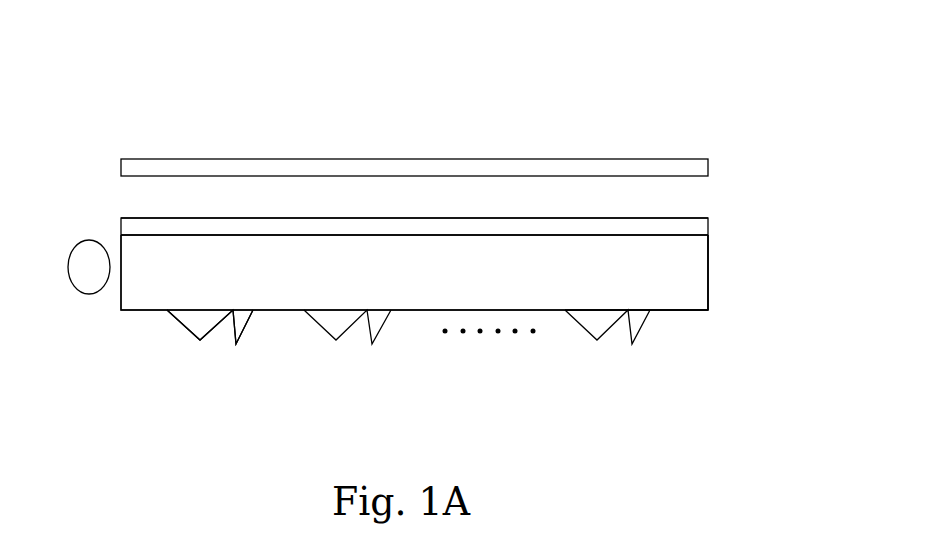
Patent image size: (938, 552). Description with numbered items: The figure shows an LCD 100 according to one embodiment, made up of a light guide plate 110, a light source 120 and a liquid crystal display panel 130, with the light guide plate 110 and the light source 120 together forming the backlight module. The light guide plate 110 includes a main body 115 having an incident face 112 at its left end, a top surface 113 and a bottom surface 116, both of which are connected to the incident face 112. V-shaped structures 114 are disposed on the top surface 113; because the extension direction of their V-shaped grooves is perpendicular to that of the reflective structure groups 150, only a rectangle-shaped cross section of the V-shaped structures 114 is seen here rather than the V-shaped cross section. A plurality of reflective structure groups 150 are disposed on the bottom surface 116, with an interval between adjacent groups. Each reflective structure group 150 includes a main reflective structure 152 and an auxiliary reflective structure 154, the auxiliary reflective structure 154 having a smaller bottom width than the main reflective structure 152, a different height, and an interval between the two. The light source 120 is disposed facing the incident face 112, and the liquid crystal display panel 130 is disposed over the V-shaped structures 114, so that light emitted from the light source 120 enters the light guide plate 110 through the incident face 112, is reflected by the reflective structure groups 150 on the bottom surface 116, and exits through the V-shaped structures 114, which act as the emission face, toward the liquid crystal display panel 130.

The LCD 100 is at (64, 28).
The light guide plate 110 is at (735, 218).
The incident face 112 is at (121, 271).
The top surface 113 is at (681, 233).
The V-shaped structures 114 is at (243, 229).
The main body 115 is at (712, 322).
The bottom surface 116 is at (672, 310).
The light source 120 is at (87, 294).
The liquid crystal display panel 130 is at (222, 158).
The reflective structure groups 150 is at (248, 365).
The main reflective structure 152 is at (183, 325).
The auxiliary reflective structure 154 is at (247, 322).